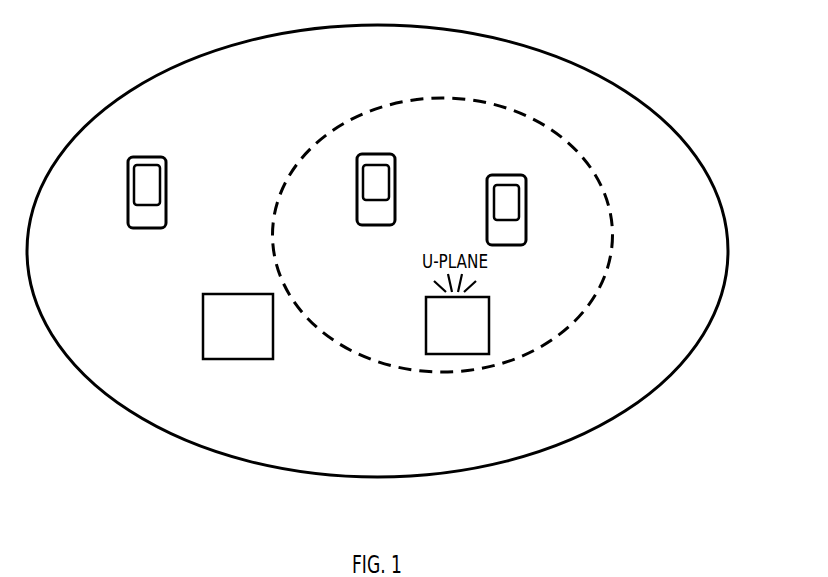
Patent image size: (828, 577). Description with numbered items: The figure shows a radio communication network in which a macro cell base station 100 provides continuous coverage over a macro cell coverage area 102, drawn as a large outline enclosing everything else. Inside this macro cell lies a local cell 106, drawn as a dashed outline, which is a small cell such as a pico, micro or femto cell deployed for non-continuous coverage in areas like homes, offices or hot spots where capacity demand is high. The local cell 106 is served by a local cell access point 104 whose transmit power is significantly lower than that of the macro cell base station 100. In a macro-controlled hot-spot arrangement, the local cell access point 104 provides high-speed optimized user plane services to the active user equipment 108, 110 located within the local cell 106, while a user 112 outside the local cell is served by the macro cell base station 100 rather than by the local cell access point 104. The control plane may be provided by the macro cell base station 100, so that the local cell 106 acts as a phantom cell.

The macro cell base station 100 is at (203, 345).
The coverage area (macro cell) 102 is at (565, 58).
The local cell access point 104 is at (490, 325).
The local cell 106 is at (342, 128).
The user equipment 108 is at (396, 178).
The user equipment 110 is at (527, 222).
The user 112 is at (128, 196).